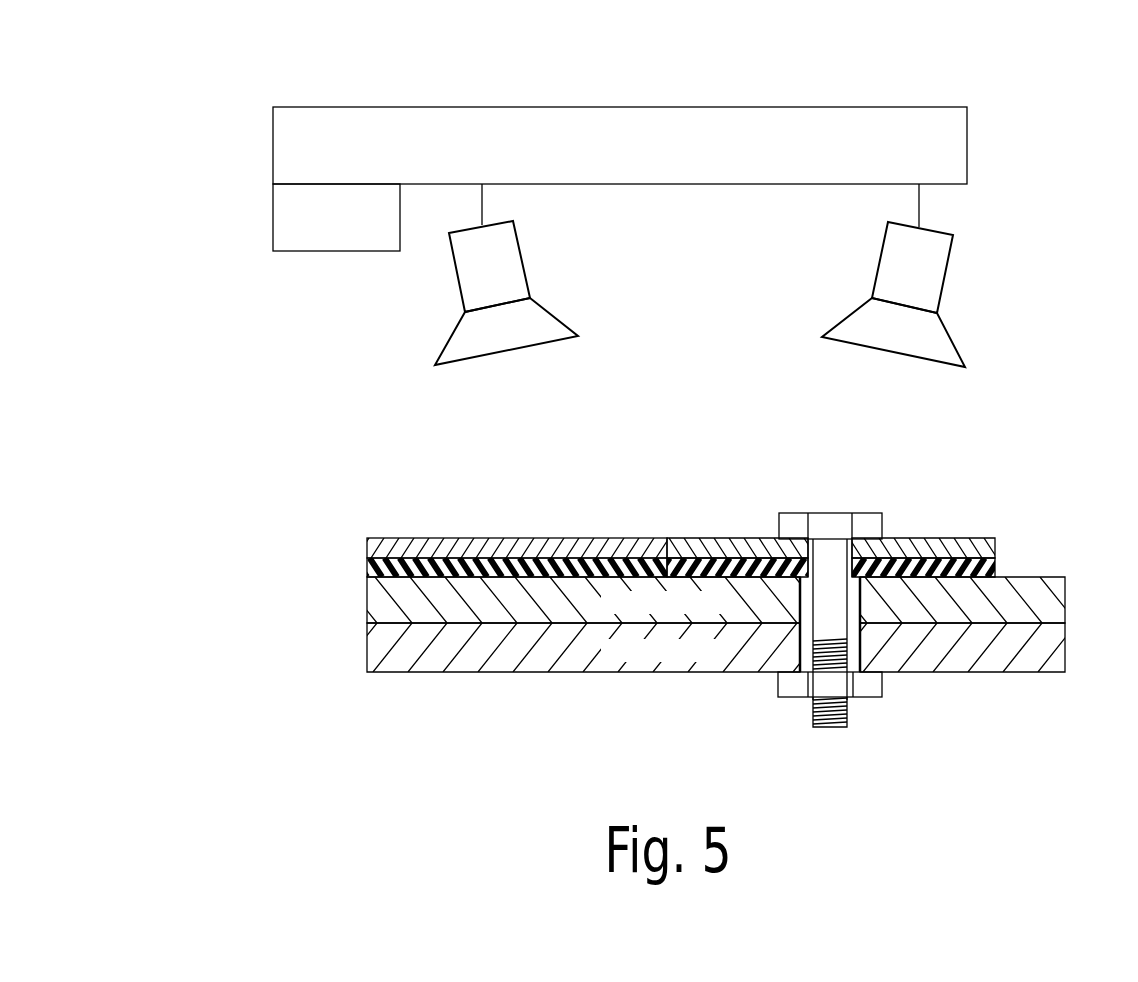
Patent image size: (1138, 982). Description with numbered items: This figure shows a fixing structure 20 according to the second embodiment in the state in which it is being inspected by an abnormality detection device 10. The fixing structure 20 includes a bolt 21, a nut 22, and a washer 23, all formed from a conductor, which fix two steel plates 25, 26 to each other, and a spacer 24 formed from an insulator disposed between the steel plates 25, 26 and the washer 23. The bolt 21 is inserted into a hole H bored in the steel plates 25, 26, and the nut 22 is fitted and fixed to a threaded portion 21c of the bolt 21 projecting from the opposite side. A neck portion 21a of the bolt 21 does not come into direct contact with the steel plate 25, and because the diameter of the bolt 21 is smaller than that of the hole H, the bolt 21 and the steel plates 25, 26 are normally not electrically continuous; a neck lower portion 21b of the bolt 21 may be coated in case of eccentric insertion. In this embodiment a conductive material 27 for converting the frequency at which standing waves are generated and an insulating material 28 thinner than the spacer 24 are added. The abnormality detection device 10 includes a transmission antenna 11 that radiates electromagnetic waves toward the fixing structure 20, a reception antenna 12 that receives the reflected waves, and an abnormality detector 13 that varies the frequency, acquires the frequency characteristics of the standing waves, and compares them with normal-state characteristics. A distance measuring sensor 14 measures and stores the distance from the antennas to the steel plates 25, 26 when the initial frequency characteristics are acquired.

The abnormality detection device 10 is at (1017, 80).
The transmission antenna 11 is at (522, 248).
The reception antenna 12 is at (952, 260).
The abnormality detector 13 is at (615, 107).
The distance measuring sensor 14 is at (273, 215).
The fixing structure 20 is at (1017, 487).
The bolt 21 is at (835, 512).
The neck portion 21a is at (778, 518).
The neck lower portion 21b is at (813, 632).
The threaded portion 21c is at (813, 712).
The nut 22 is at (870, 698).
The washer 23 is at (995, 547).
The spacer 24 is at (995, 570).
The steel plate 25 is at (1065, 605).
The steel plate 26 is at (1065, 648).
The conductive material 27 is at (367, 545).
The insulating material 28 is at (367, 566).
The hole H is at (853, 638).